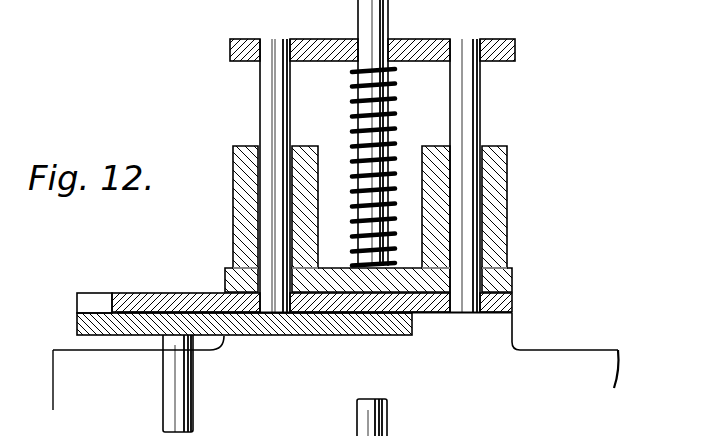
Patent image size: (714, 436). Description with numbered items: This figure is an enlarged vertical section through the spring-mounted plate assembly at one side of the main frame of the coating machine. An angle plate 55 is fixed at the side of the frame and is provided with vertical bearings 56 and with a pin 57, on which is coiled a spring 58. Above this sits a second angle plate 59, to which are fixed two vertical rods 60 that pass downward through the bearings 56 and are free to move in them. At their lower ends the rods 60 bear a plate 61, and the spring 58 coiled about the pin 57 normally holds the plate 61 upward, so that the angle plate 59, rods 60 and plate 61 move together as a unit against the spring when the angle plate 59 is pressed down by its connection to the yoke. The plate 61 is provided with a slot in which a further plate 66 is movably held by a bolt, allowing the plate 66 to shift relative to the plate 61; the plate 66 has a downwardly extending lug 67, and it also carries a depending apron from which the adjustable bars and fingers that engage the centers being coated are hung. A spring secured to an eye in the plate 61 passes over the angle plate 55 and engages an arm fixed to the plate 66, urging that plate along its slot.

The angle plate 55 is at (512, 281).
The vertical bearings 56 is at (528, 220).
The pin 57 is at (360, 21).
The spring 58 is at (367, 134).
The angle plate 59 is at (372, 35).
The vertical rods 60 is at (370, 176).
The plate 61 is at (312, 290).
The plate 66 is at (80, 310).
The lug 67 is at (194, 416).